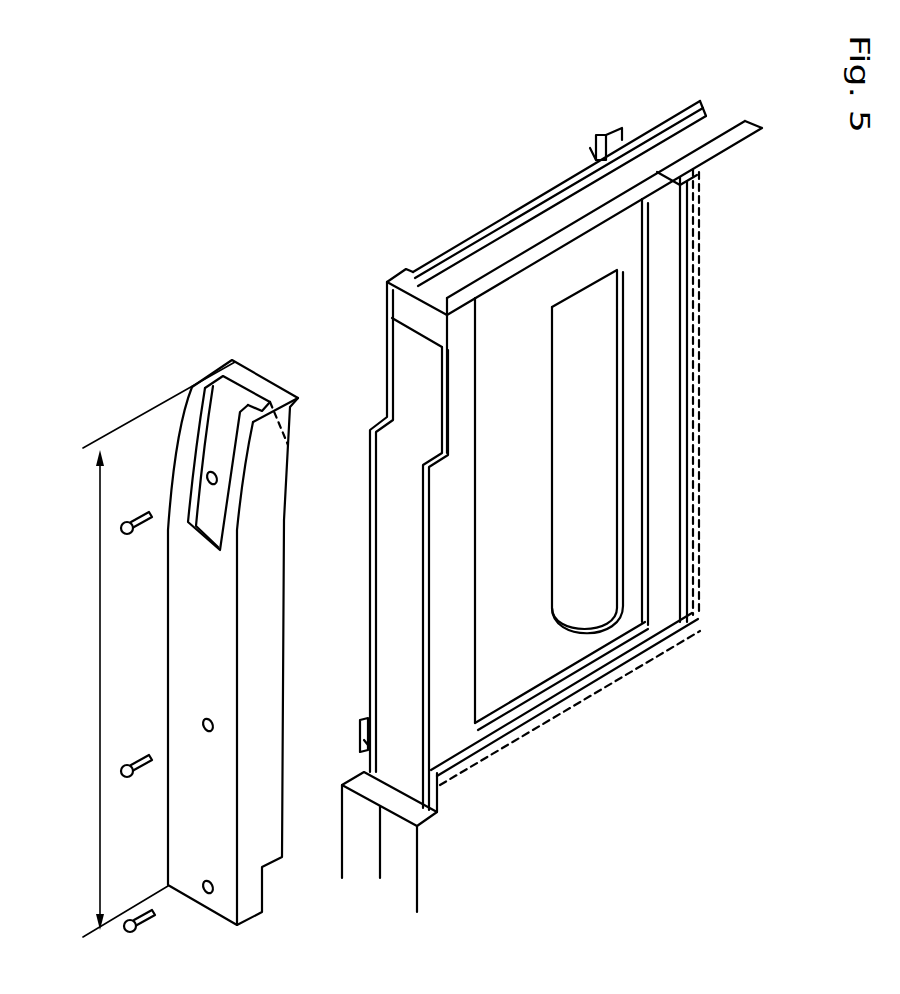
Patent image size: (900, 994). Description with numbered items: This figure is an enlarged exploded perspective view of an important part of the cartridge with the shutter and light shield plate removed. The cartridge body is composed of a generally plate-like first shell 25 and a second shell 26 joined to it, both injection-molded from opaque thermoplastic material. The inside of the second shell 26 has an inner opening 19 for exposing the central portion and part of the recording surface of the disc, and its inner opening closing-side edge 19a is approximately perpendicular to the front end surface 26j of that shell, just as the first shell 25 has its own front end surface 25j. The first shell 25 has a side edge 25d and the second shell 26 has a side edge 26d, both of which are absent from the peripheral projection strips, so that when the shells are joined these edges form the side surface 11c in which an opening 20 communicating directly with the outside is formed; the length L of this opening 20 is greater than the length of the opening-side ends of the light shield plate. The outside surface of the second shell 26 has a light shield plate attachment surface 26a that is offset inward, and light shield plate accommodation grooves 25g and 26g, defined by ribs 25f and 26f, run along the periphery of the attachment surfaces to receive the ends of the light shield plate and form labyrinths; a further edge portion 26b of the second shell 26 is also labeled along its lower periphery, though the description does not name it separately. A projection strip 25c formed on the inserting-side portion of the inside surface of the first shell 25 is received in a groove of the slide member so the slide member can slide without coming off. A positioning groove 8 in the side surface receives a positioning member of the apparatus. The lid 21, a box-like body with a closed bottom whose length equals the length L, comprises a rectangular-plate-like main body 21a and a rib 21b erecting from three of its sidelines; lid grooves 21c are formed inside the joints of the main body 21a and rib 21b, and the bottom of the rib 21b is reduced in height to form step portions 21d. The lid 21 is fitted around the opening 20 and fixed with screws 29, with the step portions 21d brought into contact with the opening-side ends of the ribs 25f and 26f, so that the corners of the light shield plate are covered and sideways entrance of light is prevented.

The positioning groove 8 is at (217, 432).
The side surface 11c is at (383, 295).
The inner opening 19 is at (572, 482).
The inner opening closing-side edge 19a is at (607, 480).
The opening 20 is at (407, 355).
The lid 21 is at (193, 667).
The main body 21a is at (197, 588).
The rib 21b is at (236, 360).
The lid groove 21c is at (203, 382).
The step portion 21d is at (262, 867).
The first shell 25 is at (345, 845).
The projection strip 25c is at (697, 120).
The side edge 25d is at (383, 330).
The rib 25f is at (597, 145).
The light shield plate accommodation groove 25g is at (597, 133).
The front end surface 25j is at (480, 227).
The second shell 26 is at (408, 865).
The light shield plate attachment surface 26a is at (667, 597).
The cover bottom flange 26b is at (563, 663).
The side edge 26d is at (440, 387).
The rib 26f is at (680, 358).
The light shield plate accommodation groove 26g is at (680, 325).
The front end surface 26j is at (450, 253).
The screw 29 is at (121, 528).
The length of the opening L is at (155, 649).